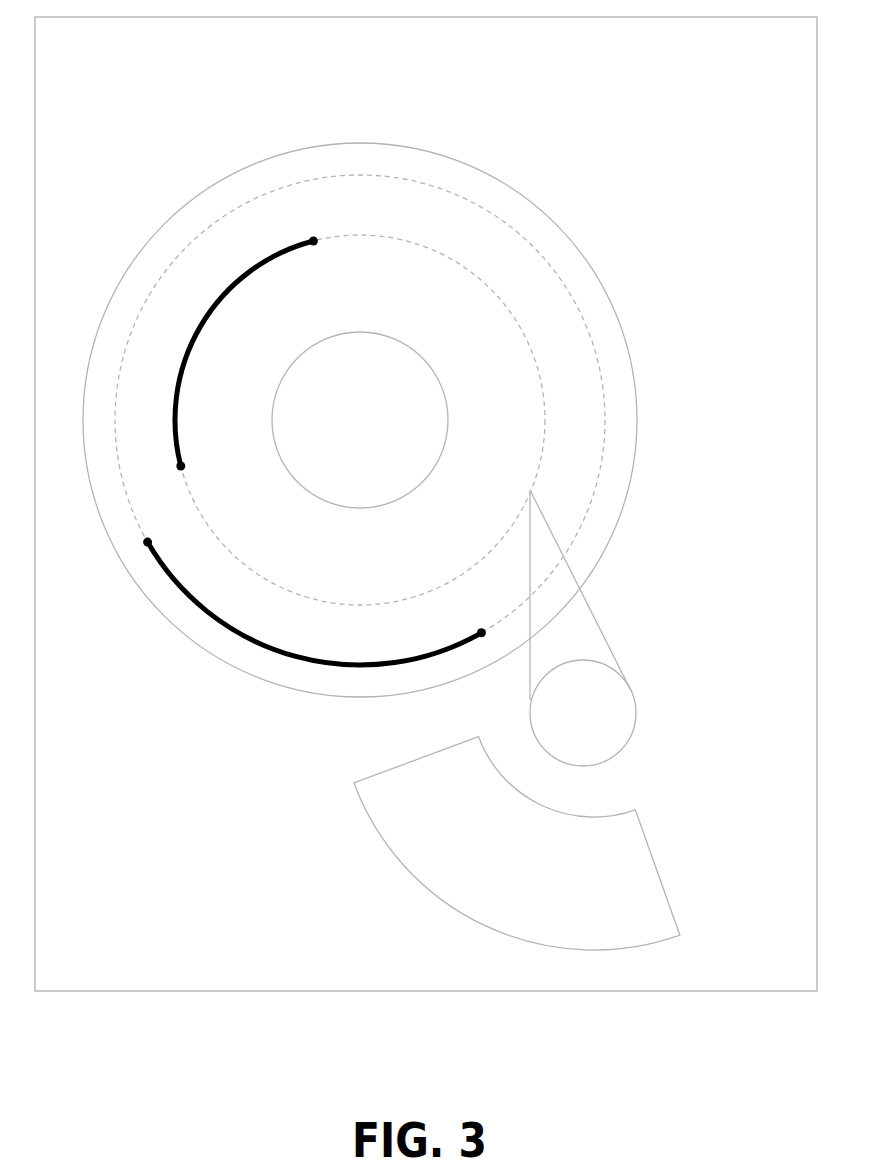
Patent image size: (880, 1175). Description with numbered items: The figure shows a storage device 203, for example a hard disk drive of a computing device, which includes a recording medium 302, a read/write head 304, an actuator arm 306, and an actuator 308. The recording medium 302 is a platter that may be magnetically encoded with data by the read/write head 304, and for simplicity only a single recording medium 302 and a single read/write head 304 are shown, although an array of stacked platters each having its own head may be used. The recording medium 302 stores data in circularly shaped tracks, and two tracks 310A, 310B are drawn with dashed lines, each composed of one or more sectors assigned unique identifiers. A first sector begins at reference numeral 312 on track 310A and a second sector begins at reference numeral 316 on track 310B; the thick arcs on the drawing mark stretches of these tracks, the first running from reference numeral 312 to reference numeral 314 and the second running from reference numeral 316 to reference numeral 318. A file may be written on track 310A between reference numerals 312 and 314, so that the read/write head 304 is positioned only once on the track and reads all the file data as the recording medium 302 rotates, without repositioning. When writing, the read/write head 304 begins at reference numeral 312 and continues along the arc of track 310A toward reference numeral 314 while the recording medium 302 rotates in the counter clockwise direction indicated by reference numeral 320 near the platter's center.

The storage device 203 is at (447, 110).
The recording medium 302 is at (616, 262).
The read/write head 304 is at (547, 484).
The actuator arm 306 is at (646, 659).
The actuator 308 is at (667, 839).
The track 310A is at (478, 281).
The track 310B is at (195, 238).
The beginning of first sector 312 is at (317, 236).
The end location of file on track 310A 314 is at (185, 462).
The beginning of second sector 316 is at (152, 536).
The second data segment end point 318 is at (475, 627).
The counter clockwise rotation direction 320 is at (350, 405).